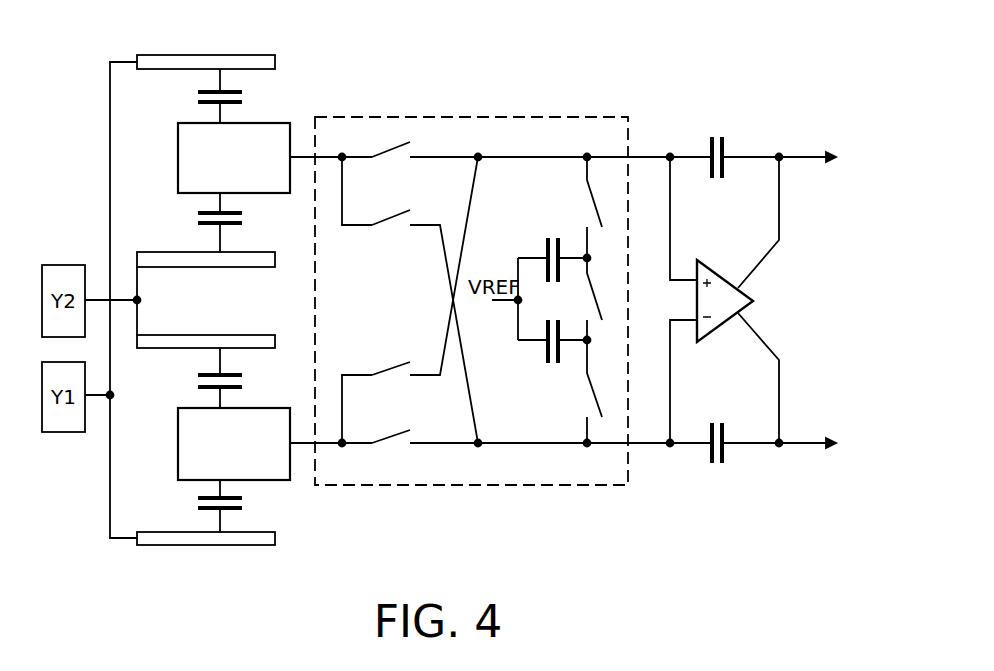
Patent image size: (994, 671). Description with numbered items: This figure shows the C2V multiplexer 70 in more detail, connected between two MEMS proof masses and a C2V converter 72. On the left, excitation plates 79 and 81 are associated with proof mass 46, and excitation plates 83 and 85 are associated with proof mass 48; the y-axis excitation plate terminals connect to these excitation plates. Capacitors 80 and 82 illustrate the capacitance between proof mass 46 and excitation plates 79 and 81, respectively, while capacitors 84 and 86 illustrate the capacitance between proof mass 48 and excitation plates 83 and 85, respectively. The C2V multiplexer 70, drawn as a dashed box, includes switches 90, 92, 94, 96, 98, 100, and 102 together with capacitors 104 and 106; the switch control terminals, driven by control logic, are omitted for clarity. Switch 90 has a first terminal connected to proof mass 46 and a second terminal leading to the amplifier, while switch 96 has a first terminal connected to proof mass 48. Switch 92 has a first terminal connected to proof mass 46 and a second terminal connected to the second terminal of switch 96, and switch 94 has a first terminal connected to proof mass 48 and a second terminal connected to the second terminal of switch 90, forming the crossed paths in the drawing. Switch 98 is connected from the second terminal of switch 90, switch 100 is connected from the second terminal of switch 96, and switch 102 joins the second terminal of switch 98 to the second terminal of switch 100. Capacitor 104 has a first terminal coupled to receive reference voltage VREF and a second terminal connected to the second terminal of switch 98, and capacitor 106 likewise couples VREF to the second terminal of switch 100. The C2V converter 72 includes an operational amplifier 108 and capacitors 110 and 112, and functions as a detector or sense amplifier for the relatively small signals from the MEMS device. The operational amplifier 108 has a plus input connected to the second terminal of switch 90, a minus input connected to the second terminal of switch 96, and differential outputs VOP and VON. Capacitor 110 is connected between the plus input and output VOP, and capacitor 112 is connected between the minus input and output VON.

The excitation plate 79 is at (165, 55).
The capacitor 80 is at (198, 96).
The proof mass 46 is at (178, 157).
The excitation plate 81 is at (165, 252).
The capacitor 82 is at (242, 213).
The excitation plate 83 is at (165, 348).
The capacitor 84 is at (242, 376).
The proof mass 48 is at (178, 443).
The excitation plate 85 is at (165, 532).
The capacitor 86 is at (242, 499).
The C2V multiplexer 70 is at (524, 117).
The switch 90 is at (390, 152).
The switch 92 is at (390, 221).
The switch 94 is at (394, 368).
The switch 96 is at (394, 436).
The switch 98 is at (592, 206).
The switch 100 is at (595, 400).
The switch 102 is at (598, 302).
The capacitor 104 is at (548, 248).
The capacitor 106 is at (548, 352).
The operational amplifier 108 is at (712, 270).
The capacitor 110 is at (718, 137).
The capacitor 112 is at (718, 423).
The C2V converter 72 is at (747, 323).